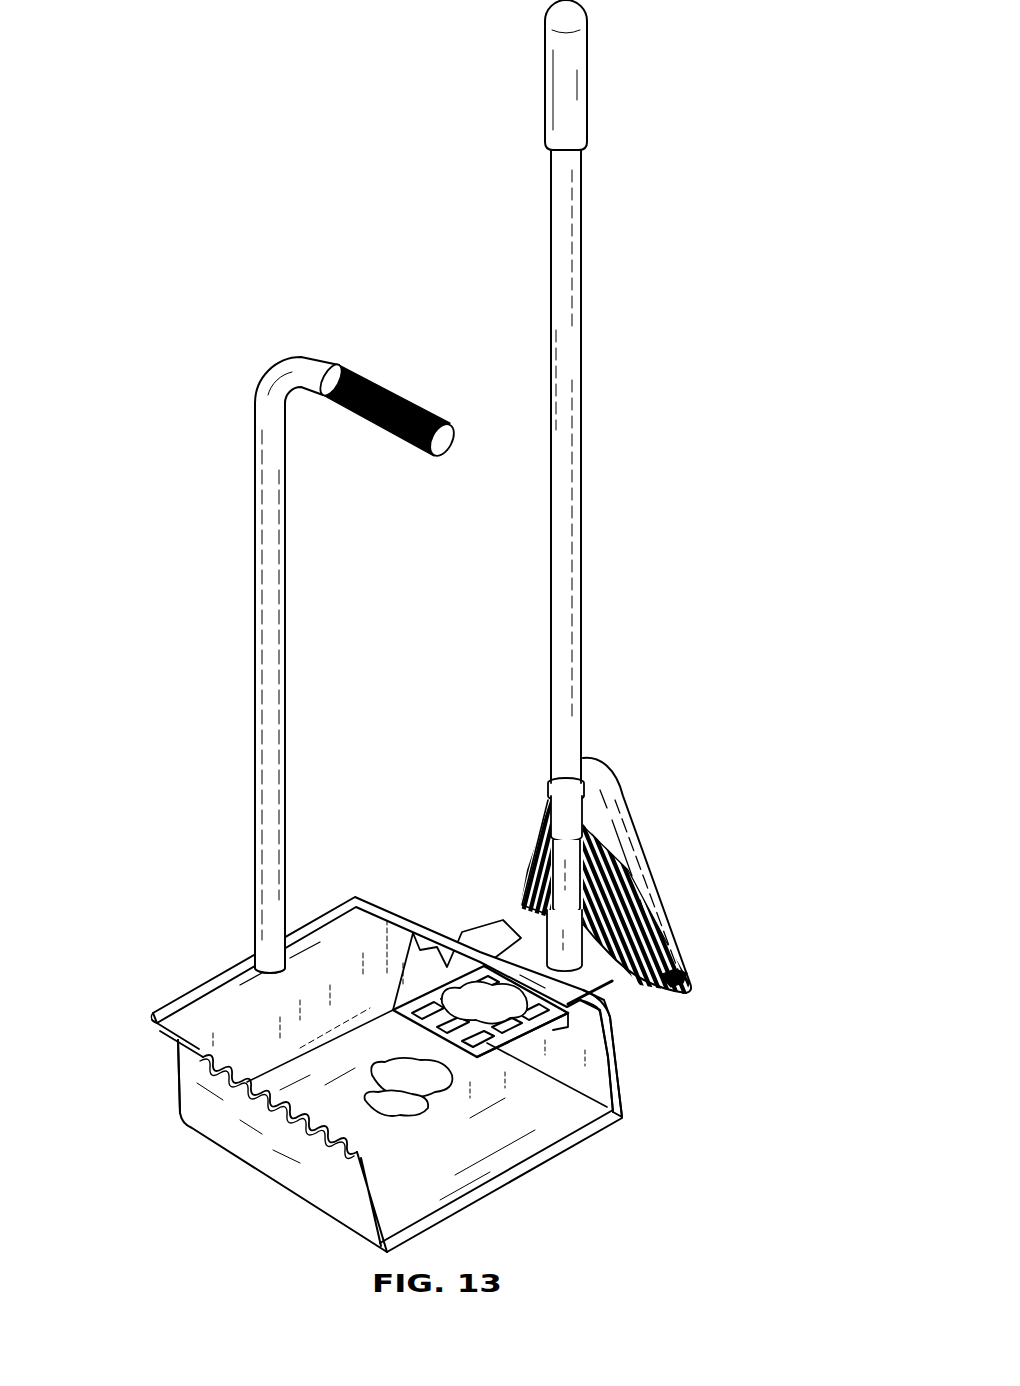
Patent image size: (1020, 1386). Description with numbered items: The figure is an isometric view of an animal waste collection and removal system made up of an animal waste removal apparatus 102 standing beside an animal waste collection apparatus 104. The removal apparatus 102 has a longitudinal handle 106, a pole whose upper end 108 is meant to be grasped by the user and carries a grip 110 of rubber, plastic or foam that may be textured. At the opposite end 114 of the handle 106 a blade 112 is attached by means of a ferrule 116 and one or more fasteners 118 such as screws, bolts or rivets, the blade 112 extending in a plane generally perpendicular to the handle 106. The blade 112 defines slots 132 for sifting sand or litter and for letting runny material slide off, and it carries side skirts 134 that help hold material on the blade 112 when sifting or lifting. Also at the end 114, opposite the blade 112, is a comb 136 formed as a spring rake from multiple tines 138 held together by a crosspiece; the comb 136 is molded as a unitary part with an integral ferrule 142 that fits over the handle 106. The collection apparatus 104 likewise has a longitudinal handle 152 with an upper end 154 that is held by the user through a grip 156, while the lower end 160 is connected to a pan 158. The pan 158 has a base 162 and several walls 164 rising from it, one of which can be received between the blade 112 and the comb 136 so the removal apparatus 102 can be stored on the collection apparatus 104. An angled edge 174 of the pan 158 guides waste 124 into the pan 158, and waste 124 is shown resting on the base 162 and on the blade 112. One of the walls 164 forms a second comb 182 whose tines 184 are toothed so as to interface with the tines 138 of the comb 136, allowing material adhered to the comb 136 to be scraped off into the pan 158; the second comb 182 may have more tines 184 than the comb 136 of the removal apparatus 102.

The animal waste removal apparatus 102 is at (614, 521).
The animal waste collection apparatus 104 is at (391, 773).
The longitudinal handle 106 is at (580, 382).
The end of the handle 108 is at (580, 178).
The grip 110 is at (587, 72).
The blade 112 is at (490, 1031).
The end of the handle 114 is at (580, 732).
The ferrule 116 is at (477, 948).
The fasteners 118 is at (628, 900).
The waste 124 is at (622, 1070).
The slots 132 is at (503, 1043).
The skirts 134 is at (615, 985).
The comb 136 is at (658, 910).
The tines 138 is at (713, 972).
The integral ferrule 142 is at (560, 806).
The longitudinal handle 152 is at (283, 617).
The end of the handle 154 is at (252, 520).
The grip 156 is at (418, 403).
The pan 158 is at (391, 1039).
The end of the handle 160 is at (253, 927).
The base 162 is at (393, 1162).
The walls 164 is at (243, 1063).
The edge 174 is at (483, 1193).
The second comb 182 is at (207, 1055).
The tines 184 is at (242, 1073).